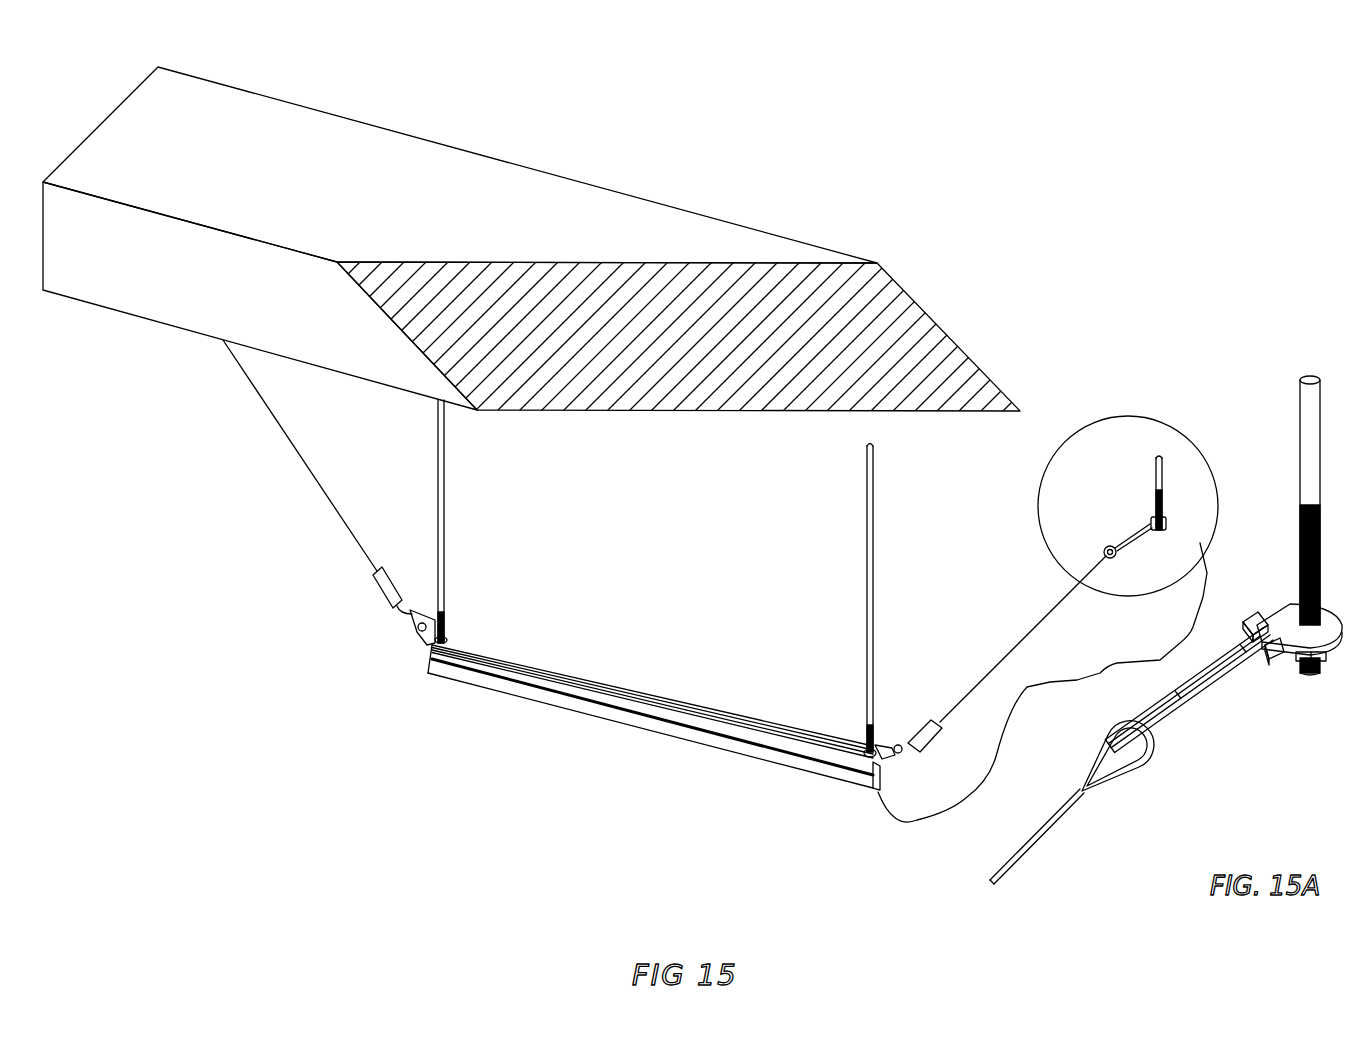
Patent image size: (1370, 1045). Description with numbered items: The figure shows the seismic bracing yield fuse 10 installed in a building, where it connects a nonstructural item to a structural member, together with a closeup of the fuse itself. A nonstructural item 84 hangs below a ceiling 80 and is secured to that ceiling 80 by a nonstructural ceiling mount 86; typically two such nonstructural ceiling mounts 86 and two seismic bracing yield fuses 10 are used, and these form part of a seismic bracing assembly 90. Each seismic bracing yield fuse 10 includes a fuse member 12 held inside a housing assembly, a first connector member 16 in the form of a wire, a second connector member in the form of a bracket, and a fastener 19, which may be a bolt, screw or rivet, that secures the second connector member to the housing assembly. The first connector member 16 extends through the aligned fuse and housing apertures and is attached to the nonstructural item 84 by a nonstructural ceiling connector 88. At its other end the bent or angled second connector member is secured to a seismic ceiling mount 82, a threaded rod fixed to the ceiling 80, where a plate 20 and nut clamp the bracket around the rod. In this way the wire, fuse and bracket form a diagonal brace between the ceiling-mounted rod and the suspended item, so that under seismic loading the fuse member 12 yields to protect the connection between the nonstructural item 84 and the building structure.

In FIG. 15, the seismic bracing yield fuse 10 is at (1122, 524).
In FIG. 15A, the seismic bracing yield fuse 10 is at (1218, 700).
In FIG. 15A, the fuse member 12 is at (1330, 623).
In FIG. 15, the first connector member 16 is at (1047, 617).
In FIG. 15A, the first connector member 16 is at (1032, 847).
In FIG. 15A, the fastener 19 is at (1248, 612).
In FIG. 15A, the clamp plate 20 is at (1323, 620).
In FIG. 15, the ceiling 80 is at (677, 413).
In FIG. 15, the seismic ceiling mount 82 is at (1153, 473).
In FIG. 15A, the seismic ceiling mount 82 is at (1320, 485).
In FIG. 15, the nonstructural item 84 is at (802, 737).
In FIG. 15, the nonstructural ceiling mount 86 is at (873, 570).
In FIG. 15, the nonstructural ceiling connector 88 is at (883, 747).
In FIG. 15, the seismic bracing assembly 90 is at (1048, 619).